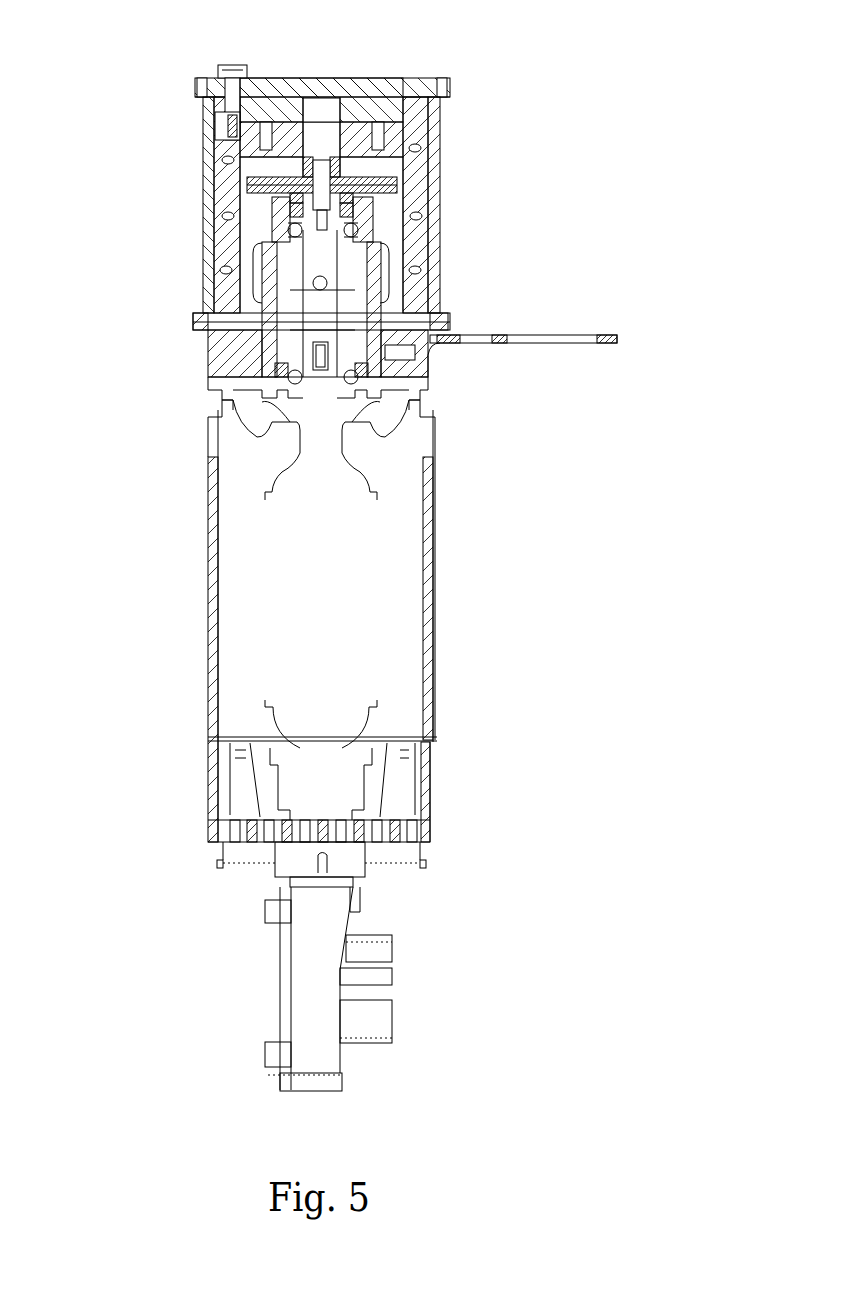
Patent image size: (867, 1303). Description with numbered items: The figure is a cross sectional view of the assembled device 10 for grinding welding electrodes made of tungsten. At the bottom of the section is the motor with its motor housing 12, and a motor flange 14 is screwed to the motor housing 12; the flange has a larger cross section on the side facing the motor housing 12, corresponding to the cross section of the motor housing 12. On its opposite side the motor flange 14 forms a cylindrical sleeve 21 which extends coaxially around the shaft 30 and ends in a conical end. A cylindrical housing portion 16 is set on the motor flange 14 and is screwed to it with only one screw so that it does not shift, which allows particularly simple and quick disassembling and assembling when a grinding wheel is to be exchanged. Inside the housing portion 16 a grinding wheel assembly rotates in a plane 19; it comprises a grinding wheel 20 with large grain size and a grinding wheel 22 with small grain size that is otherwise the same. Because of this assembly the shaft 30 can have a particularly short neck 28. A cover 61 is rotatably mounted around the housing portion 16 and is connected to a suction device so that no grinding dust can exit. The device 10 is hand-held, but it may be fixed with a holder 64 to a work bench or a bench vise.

The device 10 is at (586, 152).
The motor housing 12 is at (426, 789).
The motor flange 14 is at (255, 361).
The cylindrical housing portion 16 is at (408, 120).
The plane 19 is at (218, 183).
The grinding wheel 20 is at (375, 179).
The cylindrical sleeve 21 is at (372, 298).
The grinding wheel 22 is at (372, 195).
The neck 28 is at (304, 212).
The shaft 30 is at (318, 262).
The cover 61 is at (433, 131).
The holder 64 is at (597, 343).